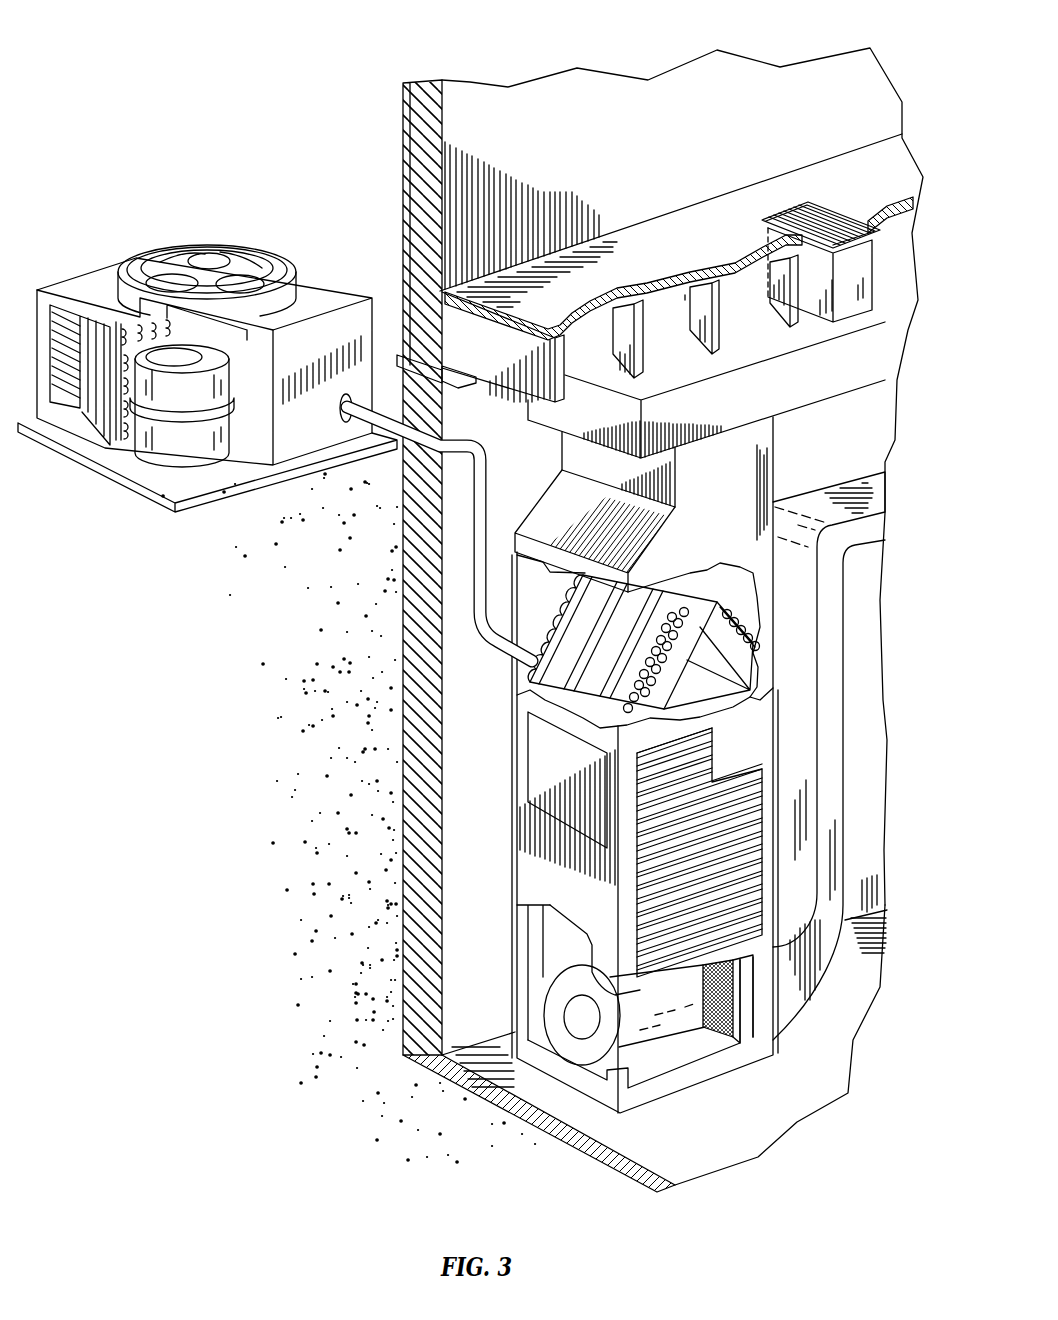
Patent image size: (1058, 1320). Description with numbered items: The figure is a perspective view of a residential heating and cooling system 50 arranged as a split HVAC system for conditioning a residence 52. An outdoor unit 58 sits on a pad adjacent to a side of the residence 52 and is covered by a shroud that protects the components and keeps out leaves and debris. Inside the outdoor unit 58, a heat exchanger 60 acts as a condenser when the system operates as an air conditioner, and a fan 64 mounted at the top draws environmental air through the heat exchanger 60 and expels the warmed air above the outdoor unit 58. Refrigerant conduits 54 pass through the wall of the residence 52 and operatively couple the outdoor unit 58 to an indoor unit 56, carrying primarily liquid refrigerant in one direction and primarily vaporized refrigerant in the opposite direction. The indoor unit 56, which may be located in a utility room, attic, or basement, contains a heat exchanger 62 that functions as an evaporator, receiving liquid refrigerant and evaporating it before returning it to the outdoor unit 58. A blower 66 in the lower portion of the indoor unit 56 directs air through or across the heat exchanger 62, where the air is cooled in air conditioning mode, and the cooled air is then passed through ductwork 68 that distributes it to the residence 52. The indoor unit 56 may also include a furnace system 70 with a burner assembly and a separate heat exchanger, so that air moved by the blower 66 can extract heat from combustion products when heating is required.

The residential heating and cooling system 50 is at (324, 20).
The residence 52 is at (688, 469).
The refrigerant conduits 54 is at (479, 506).
The indoor unit 56 is at (673, 765).
The outdoor unit 58 is at (207, 359).
The heat exchanger 60 is at (126, 333).
The heat exchanger 62 is at (588, 680).
The fan 64 is at (236, 252).
The blower 66 is at (572, 1042).
The ductwork 68 is at (853, 283).
The furnace system 70 is at (520, 735).